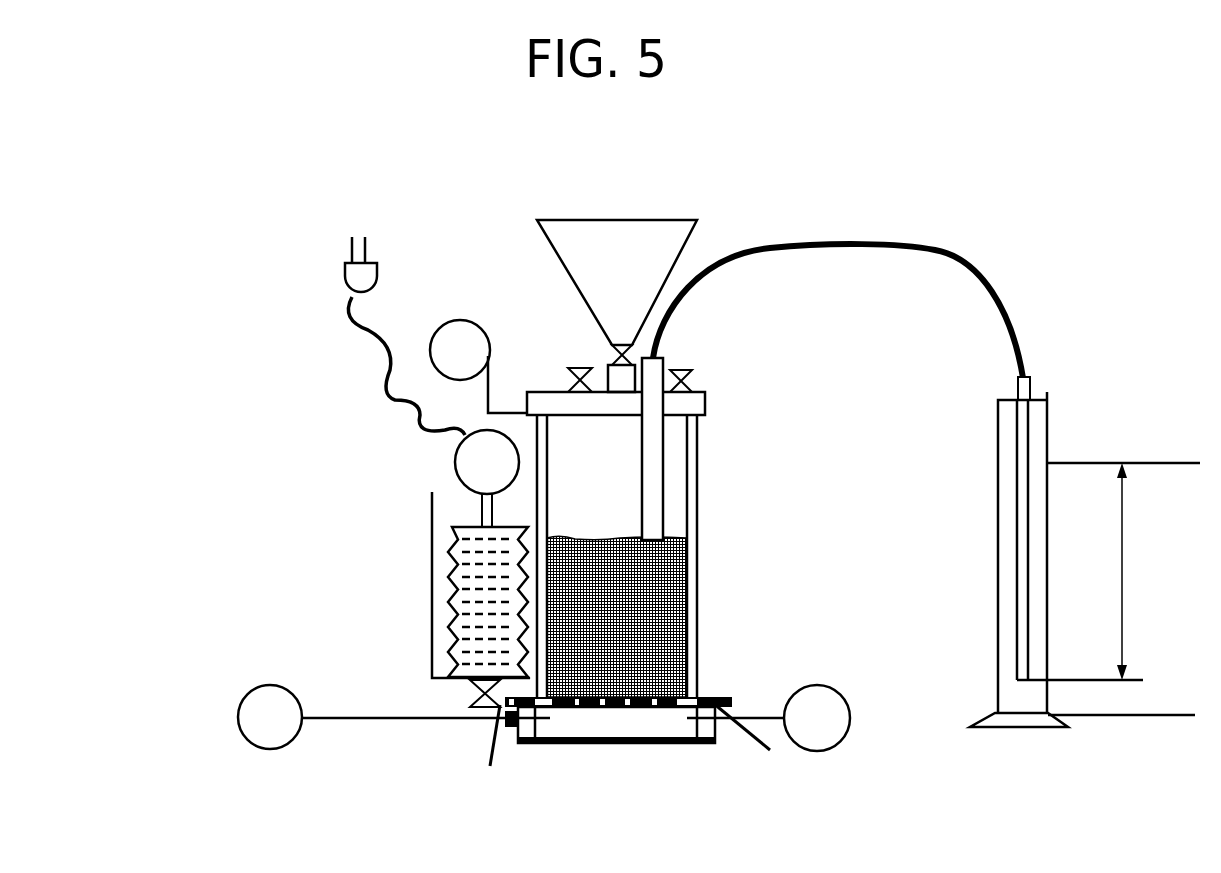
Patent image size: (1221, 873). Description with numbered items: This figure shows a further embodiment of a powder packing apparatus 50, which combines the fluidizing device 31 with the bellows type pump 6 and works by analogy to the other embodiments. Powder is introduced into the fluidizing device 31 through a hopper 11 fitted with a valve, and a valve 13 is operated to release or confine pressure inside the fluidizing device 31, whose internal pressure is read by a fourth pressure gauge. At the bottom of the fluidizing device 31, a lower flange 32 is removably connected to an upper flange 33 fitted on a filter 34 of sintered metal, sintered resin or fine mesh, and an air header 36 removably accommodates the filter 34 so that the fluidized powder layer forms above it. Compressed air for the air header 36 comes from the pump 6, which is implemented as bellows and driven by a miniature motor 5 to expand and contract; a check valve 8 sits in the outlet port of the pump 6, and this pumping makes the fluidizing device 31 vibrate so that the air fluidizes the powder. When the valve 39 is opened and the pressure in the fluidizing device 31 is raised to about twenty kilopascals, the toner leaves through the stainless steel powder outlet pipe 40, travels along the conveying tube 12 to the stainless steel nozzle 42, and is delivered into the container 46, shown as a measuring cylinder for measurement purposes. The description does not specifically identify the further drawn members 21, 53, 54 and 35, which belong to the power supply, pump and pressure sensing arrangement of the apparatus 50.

The powder packing apparatus 50 is at (178, 268).
The power plug and cord 21 is at (343, 275).
The valve 13 is at (532, 333).
The miniature motor 5 is at (453, 463).
The pump 6 is at (452, 533).
The bracket 53 is at (432, 563).
The check valve 8 is at (470, 687).
The pipe 54 is at (485, 747).
The pressure line to gauge P1 35 is at (388, 718).
The hopper 11 is at (650, 230).
The valve 39 is at (700, 356).
The fluidizing device 31 is at (697, 538).
The powder outlet pipe 40 is at (662, 465).
The conveying tube 12 is at (930, 248).
The filter 34 is at (605, 710).
The lower flange 32 is at (720, 700).
The air header 36 is at (652, 725).
The upper flange 33 is at (758, 743).
The nozzle 42 is at (982, 386).
The container 46 is at (998, 683).